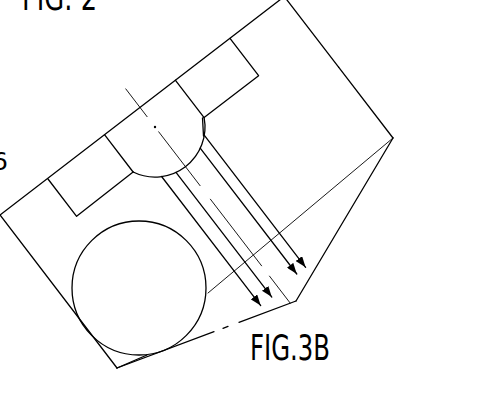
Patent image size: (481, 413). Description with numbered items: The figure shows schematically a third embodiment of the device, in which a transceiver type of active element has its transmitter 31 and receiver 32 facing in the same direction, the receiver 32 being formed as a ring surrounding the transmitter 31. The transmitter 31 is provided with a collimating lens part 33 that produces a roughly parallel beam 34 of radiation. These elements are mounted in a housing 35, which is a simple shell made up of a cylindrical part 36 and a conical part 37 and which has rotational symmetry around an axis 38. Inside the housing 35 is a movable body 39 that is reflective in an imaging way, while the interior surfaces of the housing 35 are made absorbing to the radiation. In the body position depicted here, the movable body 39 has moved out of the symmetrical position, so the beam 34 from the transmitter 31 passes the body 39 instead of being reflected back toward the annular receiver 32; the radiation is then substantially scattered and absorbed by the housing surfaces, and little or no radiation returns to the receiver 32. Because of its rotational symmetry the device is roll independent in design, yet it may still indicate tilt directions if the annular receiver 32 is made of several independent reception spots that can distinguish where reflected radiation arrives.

The transmitter 31 is at (164, 95).
The receiver 32 is at (90, 152).
The collimating lens part 33 is at (186, 130).
The beam 34 is at (222, 195).
The housing 35 is at (396, 87).
The cylindrical part 36 is at (318, 34).
The conical part 37 is at (339, 226).
The axis 38 is at (302, 302).
The movable body 39 is at (148, 300).